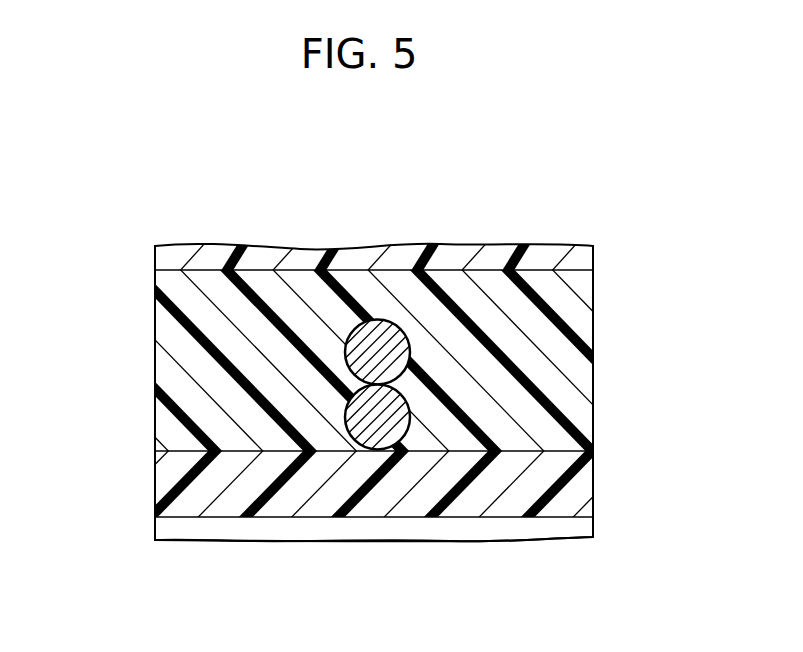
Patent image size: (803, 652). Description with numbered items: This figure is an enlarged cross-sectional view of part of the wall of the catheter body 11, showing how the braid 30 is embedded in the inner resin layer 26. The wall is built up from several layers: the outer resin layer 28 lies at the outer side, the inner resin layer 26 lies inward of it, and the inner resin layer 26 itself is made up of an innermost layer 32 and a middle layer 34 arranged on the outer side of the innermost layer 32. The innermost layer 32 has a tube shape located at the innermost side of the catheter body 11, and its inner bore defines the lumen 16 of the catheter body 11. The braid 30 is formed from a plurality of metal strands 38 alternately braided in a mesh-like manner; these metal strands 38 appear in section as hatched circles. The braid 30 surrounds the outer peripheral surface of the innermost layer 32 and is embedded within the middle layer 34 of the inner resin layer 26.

The catheter body 11 is at (401, 225).
The lumen 16 is at (223, 517).
The inner resin layer 26 is at (667, 338).
The outer resin layer 28 is at (492, 256).
The braid 30 is at (322, 413).
The innermost layer 32 is at (570, 493).
The middle layer 34 is at (567, 404).
The metal strands for braiding 38 is at (373, 350).